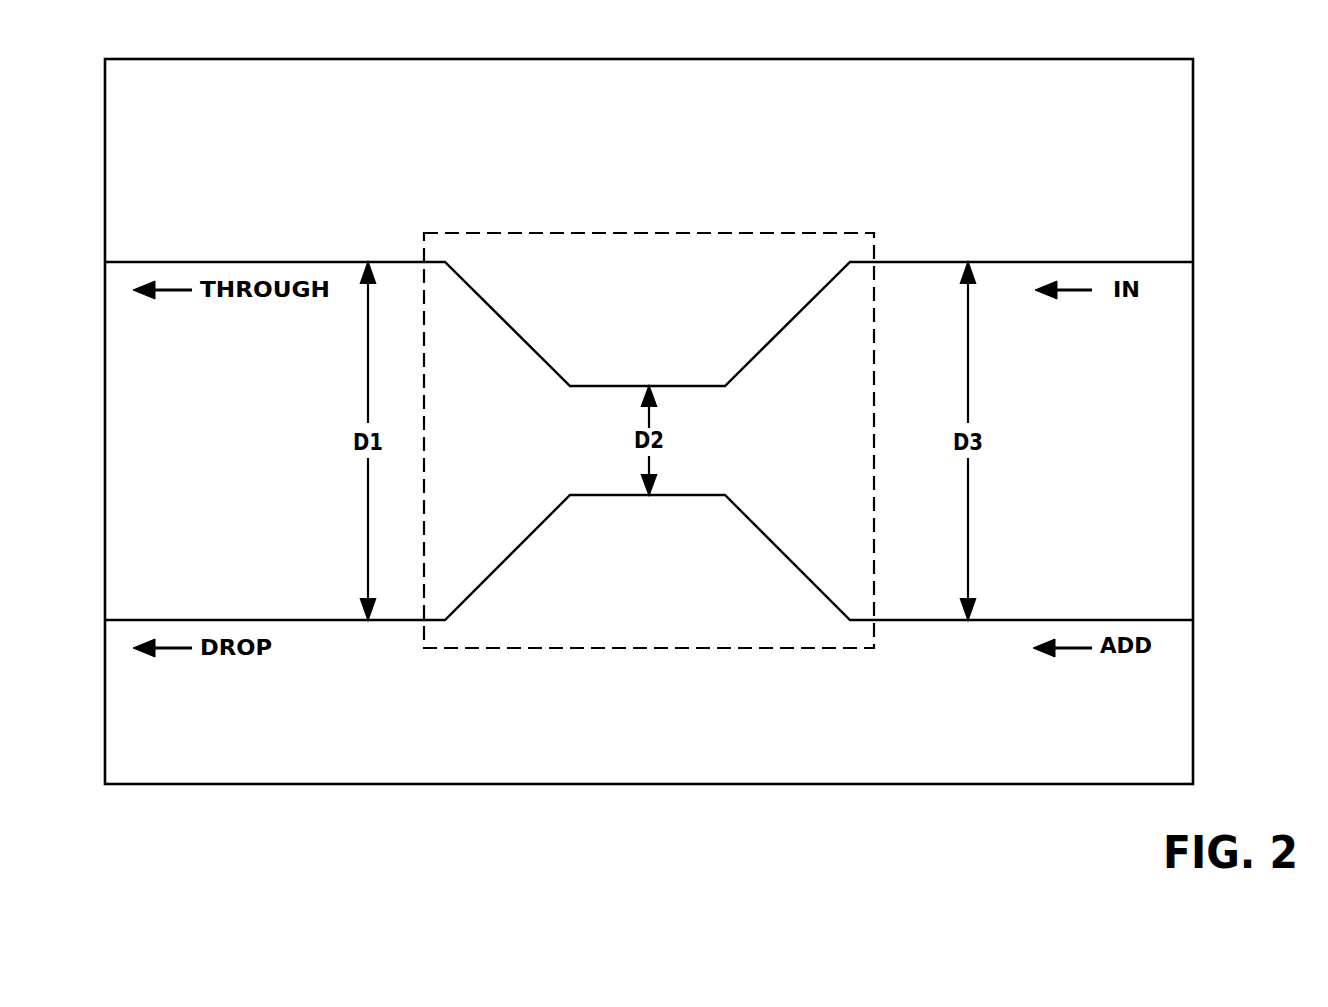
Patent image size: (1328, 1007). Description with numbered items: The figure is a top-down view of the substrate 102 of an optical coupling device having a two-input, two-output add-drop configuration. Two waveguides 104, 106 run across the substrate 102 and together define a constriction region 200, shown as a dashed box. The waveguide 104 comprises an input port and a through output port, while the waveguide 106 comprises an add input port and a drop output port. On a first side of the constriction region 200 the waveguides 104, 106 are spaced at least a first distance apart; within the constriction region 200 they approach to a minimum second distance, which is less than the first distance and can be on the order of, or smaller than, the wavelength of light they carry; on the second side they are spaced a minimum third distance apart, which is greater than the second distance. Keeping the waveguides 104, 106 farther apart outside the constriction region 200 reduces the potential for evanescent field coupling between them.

The substrate 102 is at (1015, 59).
The waveguide 104 is at (1045, 262).
The waveguide 106 is at (1045, 620).
The constriction region 200 is at (682, 233).